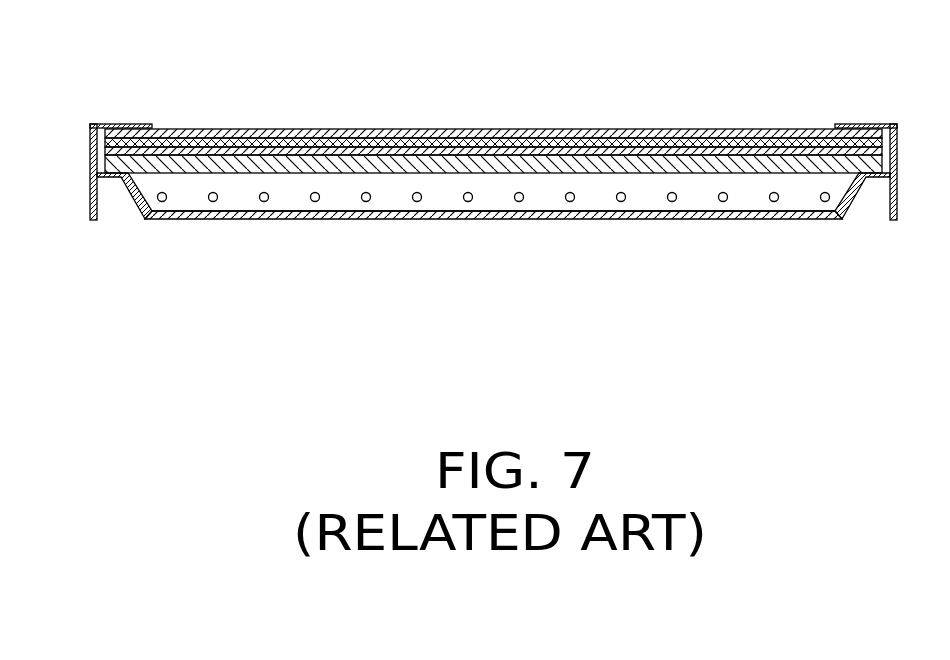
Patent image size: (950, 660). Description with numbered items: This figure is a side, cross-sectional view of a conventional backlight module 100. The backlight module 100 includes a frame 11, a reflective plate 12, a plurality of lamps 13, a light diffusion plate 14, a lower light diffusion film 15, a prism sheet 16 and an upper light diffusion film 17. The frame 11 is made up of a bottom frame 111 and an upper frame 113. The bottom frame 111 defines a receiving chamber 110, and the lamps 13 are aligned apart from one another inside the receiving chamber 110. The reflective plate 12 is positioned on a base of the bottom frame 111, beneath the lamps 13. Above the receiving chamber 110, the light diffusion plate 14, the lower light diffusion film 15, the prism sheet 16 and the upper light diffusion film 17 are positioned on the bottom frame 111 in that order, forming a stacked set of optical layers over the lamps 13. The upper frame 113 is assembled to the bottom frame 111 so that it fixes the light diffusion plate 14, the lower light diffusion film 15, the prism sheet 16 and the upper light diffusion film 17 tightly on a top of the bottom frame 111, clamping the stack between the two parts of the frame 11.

The backlight module 100 is at (457, 196).
The frame 11 is at (457, 231).
The receiving chamber 110 is at (493, 218).
The bottom frame 111 is at (202, 220).
The upper frame 113 is at (90, 202).
The reflective plate 12 is at (407, 212).
The lamps 13 is at (469, 202).
The light diffusion plate 14 is at (683, 163).
The lower light diffusion film 15 is at (545, 152).
The prism sheet 16 is at (487, 145).
The upper light diffusion film 17 is at (442, 135).